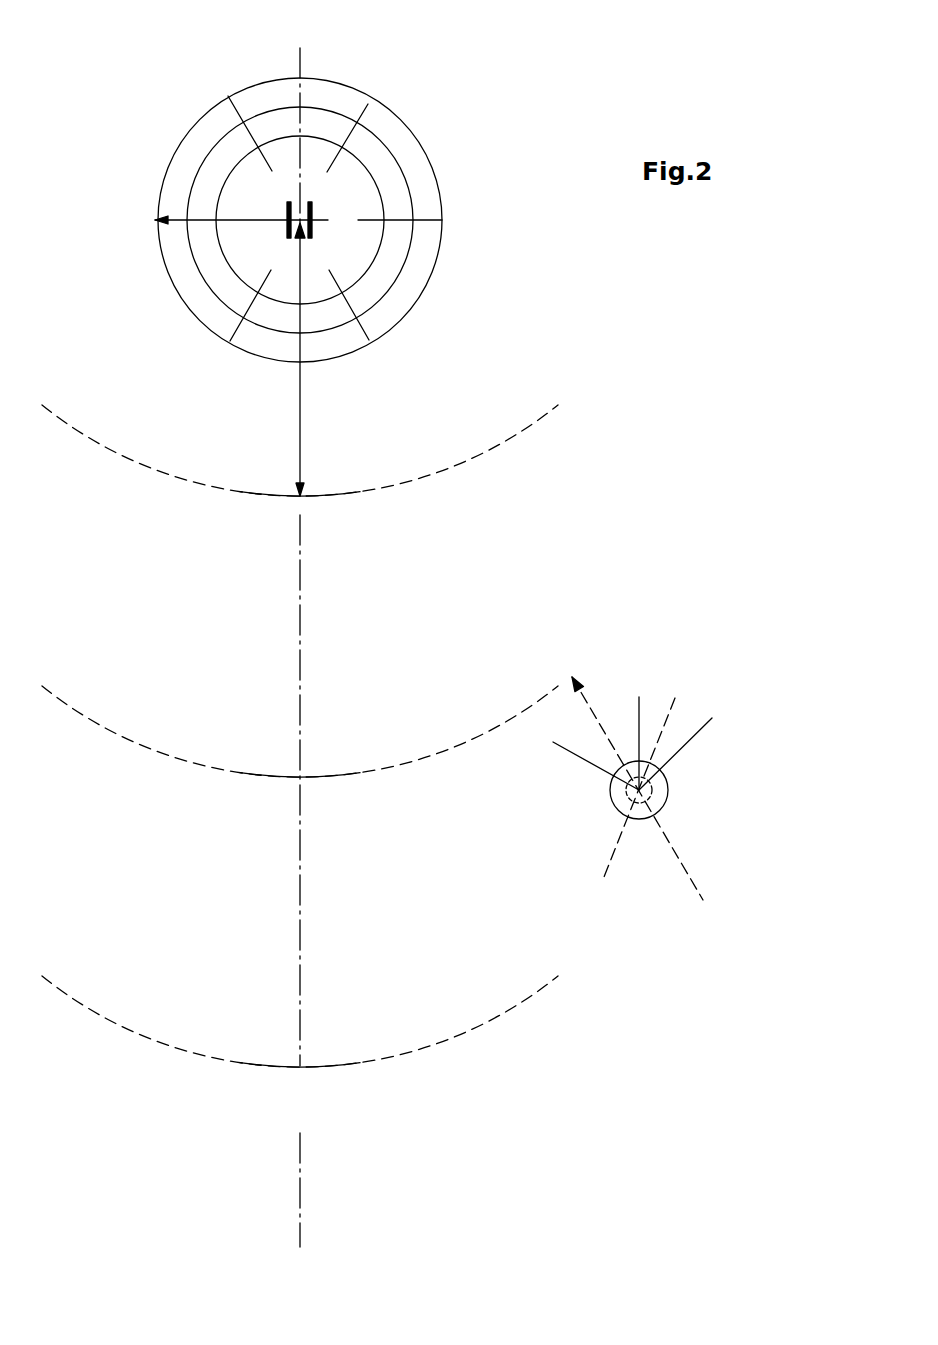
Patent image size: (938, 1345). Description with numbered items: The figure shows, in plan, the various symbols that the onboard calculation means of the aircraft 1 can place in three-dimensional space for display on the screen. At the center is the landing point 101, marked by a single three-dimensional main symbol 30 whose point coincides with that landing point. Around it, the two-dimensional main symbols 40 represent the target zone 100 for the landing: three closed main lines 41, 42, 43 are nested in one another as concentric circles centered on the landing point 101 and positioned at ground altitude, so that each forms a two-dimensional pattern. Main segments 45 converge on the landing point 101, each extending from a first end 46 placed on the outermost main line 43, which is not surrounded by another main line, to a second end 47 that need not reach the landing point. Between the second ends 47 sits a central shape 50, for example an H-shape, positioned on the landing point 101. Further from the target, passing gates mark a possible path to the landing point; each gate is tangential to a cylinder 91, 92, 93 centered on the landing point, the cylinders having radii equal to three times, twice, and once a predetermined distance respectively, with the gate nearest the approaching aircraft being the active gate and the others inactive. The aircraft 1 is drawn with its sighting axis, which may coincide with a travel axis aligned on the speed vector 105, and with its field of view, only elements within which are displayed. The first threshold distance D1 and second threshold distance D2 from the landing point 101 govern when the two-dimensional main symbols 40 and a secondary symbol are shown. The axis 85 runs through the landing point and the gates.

The aircraft 1 is at (674, 763).
The three-dimensional main symbol 30 is at (329, 240).
The two-dimensional main symbol 40 is at (505, 293).
The main line 41 is at (367, 170).
The main line 42 is at (410, 183).
The main line 43 is at (442, 184).
The main segment 45 is at (244, 114).
The first end 46 is at (237, 113).
The second end 47 is at (272, 170).
The central shape 50 is at (290, 216).
The central axis 85 is at (302, 1193).
The cylinder 91 is at (300, 1021).
The cylinder 92 is at (300, 731).
The cylinder 93 is at (322, 451).
The target zone 100 is at (358, 267).
The landing point 101 is at (308, 193).
The speed vector 105 is at (585, 680).
The first threshold distance D1 is at (282, 468).
The second threshold distance D2 is at (200, 223).